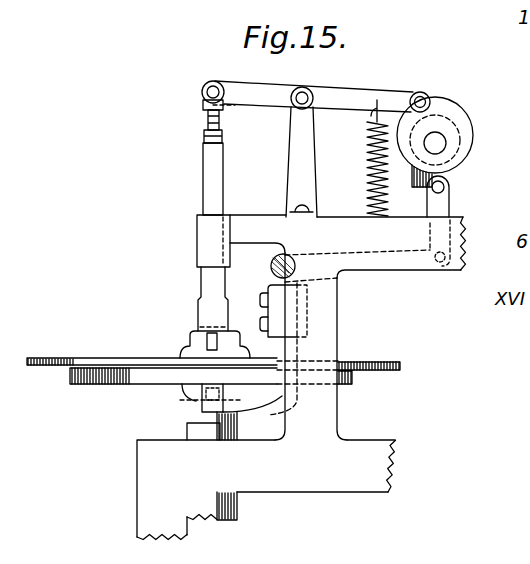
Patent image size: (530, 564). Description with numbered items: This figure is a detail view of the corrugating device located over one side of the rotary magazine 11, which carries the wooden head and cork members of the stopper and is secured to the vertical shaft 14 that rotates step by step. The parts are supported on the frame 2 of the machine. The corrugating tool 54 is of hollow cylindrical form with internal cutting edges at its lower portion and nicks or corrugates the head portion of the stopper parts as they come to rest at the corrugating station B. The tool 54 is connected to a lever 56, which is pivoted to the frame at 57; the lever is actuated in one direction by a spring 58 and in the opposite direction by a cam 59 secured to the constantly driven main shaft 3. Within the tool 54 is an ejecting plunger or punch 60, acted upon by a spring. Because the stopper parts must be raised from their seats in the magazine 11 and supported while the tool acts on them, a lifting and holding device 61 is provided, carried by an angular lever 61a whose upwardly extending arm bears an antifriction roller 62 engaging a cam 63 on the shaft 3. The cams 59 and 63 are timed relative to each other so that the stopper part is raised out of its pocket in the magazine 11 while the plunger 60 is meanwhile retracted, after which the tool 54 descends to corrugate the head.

The lever 56 is at (257, 98).
The pivot 57 is at (297, 108).
The spring 58 is at (367, 140).
The cam 59 is at (462, 135).
The main shaft 3 is at (440, 146).
The cam 63 is at (420, 178).
The antifriction roller 62 is at (452, 192).
The angular lever 61a is at (367, 272).
The corrugating tool 54 is at (201, 310).
The corrugating station B is at (142, 321).
The ejecting plunger 60 is at (203, 342).
The rotary magazine 11 is at (116, 357).
The lifting and holding device 61 is at (199, 402).
The vertical shaft 14 is at (221, 424).
The frame 2 is at (266, 396).